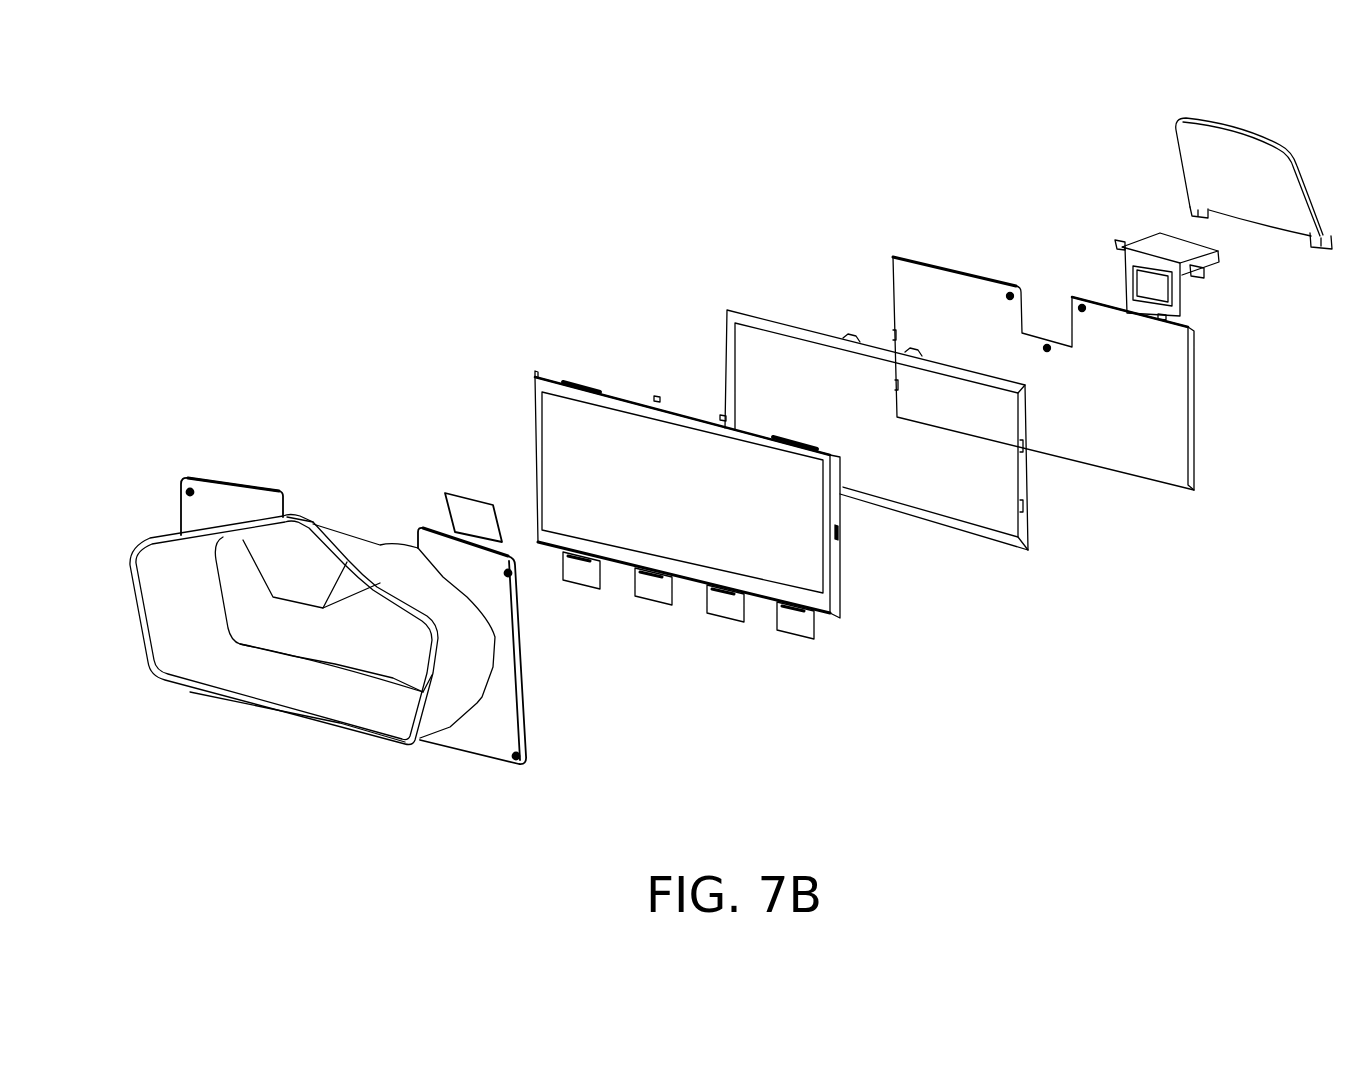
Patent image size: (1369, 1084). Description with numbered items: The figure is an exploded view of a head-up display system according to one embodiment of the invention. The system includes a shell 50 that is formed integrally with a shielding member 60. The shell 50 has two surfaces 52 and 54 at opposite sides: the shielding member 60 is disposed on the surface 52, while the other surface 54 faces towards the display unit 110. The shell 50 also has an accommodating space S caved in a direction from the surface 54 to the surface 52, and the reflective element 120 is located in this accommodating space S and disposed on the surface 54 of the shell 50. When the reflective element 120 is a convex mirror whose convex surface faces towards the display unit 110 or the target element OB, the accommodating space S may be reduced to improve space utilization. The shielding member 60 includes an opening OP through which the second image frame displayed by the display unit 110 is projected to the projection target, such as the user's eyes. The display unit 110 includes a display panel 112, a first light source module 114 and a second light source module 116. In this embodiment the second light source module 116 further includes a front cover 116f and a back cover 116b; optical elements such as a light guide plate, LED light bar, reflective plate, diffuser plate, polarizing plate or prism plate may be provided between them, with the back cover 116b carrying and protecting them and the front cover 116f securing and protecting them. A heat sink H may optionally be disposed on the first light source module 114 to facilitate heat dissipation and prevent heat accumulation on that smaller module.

The shell 50 is at (407, 664).
The surface 52 is at (505, 691).
The surface 54 is at (526, 649).
The shielding member 60 is at (291, 616).
The opening OP is at (384, 642).
The accommodating space S is at (340, 524).
The reflective element 120 is at (463, 510).
The display unit 110 is at (911, 473).
The display panel 112 is at (837, 567).
The second light source module 116 is at (959, 455).
The front cover 116f is at (1033, 510).
The back cover 116b is at (1143, 450).
The first light source module 114 is at (1183, 300).
The heat sink H is at (1222, 263).
The target element OB is at (1187, 155).